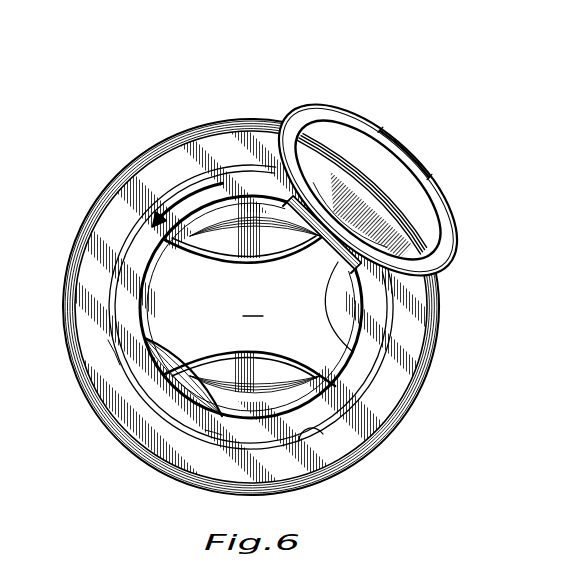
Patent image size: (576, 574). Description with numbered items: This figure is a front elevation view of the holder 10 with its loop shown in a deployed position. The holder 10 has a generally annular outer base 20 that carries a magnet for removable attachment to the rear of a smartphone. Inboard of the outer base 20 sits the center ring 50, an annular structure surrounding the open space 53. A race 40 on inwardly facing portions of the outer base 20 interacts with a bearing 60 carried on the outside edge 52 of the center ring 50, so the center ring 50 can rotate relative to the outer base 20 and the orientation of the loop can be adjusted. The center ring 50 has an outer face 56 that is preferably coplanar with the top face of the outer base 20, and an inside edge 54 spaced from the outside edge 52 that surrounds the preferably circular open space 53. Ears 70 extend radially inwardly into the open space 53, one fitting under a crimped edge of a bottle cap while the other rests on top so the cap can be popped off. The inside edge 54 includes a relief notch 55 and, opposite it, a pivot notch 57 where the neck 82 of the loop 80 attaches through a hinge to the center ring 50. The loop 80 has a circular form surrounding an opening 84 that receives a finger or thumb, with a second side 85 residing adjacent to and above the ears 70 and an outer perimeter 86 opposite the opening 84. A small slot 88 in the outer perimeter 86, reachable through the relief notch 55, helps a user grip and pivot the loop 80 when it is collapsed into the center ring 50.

The holder 10 is at (150, 88).
The outer base 20 is at (84, 303).
The race 40 is at (302, 432).
The center ring 50 is at (244, 364).
The outside edge 52 is at (118, 360).
The open space 53 is at (253, 305).
The inside edge 54 is at (147, 290).
The relief notch 55 is at (155, 388).
The outer face 56 is at (212, 432).
The pivot notch 57 is at (290, 196).
The bearing 60 is at (366, 396).
The ears 70 is at (242, 238).
The loop 80 is at (376, 171).
The neck 82 is at (340, 340).
The opening 84 is at (354, 140).
The second side 85 is at (325, 115).
The outer perimeter 86 is at (446, 201).
The slot 88 is at (392, 130).